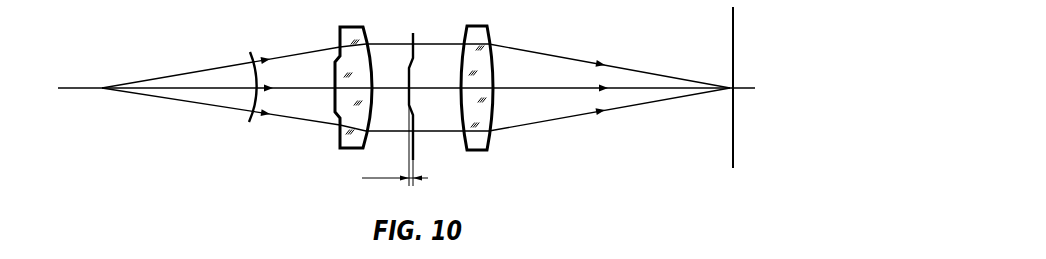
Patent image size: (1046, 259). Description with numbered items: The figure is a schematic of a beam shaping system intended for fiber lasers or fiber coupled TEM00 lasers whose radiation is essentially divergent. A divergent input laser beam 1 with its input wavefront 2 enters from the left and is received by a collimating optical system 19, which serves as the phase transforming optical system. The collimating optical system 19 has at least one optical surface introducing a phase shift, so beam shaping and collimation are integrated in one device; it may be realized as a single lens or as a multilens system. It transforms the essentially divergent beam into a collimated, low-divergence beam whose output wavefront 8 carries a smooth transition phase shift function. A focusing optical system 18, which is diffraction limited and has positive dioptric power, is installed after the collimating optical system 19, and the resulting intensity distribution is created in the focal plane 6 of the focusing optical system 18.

The input laser beam 1 is at (135, 182).
The input wavefront 2 is at (249, 122).
The collimating optical system 19 is at (340, 127).
The output wavefront 8 is at (415, 133).
The focusing optical system 18 is at (490, 133).
The focal plane 6 is at (733, 133).